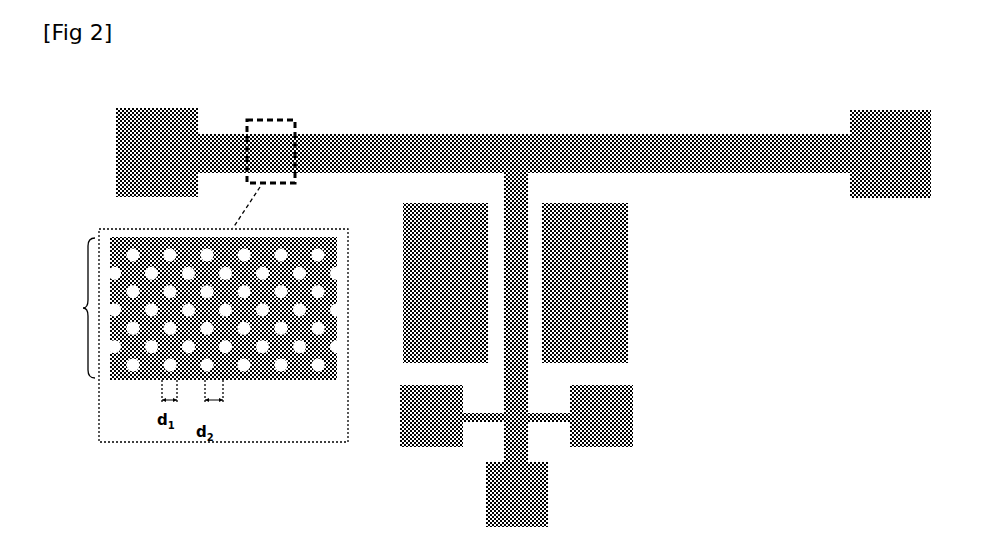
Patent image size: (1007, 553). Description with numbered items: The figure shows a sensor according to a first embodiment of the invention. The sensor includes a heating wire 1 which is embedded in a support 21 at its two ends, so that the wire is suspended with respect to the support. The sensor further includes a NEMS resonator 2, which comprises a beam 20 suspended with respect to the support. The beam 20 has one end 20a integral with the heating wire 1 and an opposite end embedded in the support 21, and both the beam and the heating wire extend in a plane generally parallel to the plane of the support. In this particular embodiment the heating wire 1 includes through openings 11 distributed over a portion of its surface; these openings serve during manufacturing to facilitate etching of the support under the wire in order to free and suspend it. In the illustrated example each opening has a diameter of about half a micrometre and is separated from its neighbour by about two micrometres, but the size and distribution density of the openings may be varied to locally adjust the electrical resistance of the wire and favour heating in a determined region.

The heating wire 1 is at (717, 65).
The through openings 11 is at (270, 317).
The NEMS resonator 2 is at (587, 350).
The beam 20 is at (528, 448).
The end of the beam 20a is at (538, 182).
The support 21 is at (503, 510).